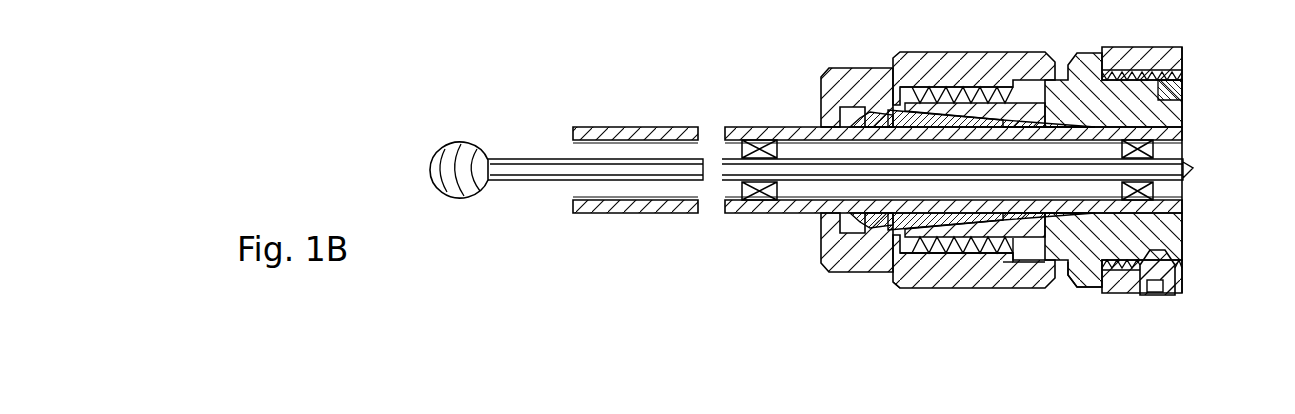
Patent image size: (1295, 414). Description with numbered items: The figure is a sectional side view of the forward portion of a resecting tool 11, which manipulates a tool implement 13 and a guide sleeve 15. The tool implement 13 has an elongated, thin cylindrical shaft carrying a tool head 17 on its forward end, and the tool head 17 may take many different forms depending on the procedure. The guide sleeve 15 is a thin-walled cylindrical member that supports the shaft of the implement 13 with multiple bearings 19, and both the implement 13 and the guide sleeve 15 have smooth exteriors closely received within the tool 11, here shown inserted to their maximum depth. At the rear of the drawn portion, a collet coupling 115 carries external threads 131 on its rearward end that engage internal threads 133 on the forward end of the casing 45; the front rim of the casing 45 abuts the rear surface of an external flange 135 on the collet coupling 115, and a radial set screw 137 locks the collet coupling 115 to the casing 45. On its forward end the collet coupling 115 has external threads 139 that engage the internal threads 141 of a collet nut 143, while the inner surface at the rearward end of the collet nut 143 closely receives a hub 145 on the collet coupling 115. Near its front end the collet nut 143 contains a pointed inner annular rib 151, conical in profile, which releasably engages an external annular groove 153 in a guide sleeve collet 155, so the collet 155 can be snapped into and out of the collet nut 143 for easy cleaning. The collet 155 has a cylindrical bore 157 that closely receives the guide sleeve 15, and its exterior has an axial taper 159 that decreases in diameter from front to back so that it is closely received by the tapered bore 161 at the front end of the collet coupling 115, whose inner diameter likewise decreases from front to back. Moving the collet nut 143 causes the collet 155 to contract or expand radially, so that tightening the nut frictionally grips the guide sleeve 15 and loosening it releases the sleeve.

The resecting tool 11 is at (848, 326).
The tool implement 13 is at (556, 172).
The guide sleeve 15 is at (638, 127).
The tool head 17 is at (437, 197).
The bearings 19 is at (757, 200).
The casing 45 is at (1143, 53).
The collet coupling 115 is at (1162, 117).
The external threads 131 is at (1177, 60).
The internal threads 133 is at (1165, 98).
The external flange 135 is at (1072, 270).
The radial set screw 137 is at (1167, 293).
The external threads 139 is at (1002, 262).
The internal threads 141 is at (922, 100).
The collet nut 143 is at (985, 62).
The hub 145 is at (1064, 270).
The inner annular rib 151 is at (822, 95).
The external annular groove 153 is at (884, 268).
The guide sleeve collet 155 is at (893, 72).
The cylindrical bore 157 is at (907, 108).
The axial taper 159 is at (947, 240).
The tapered bore 161 is at (980, 255).